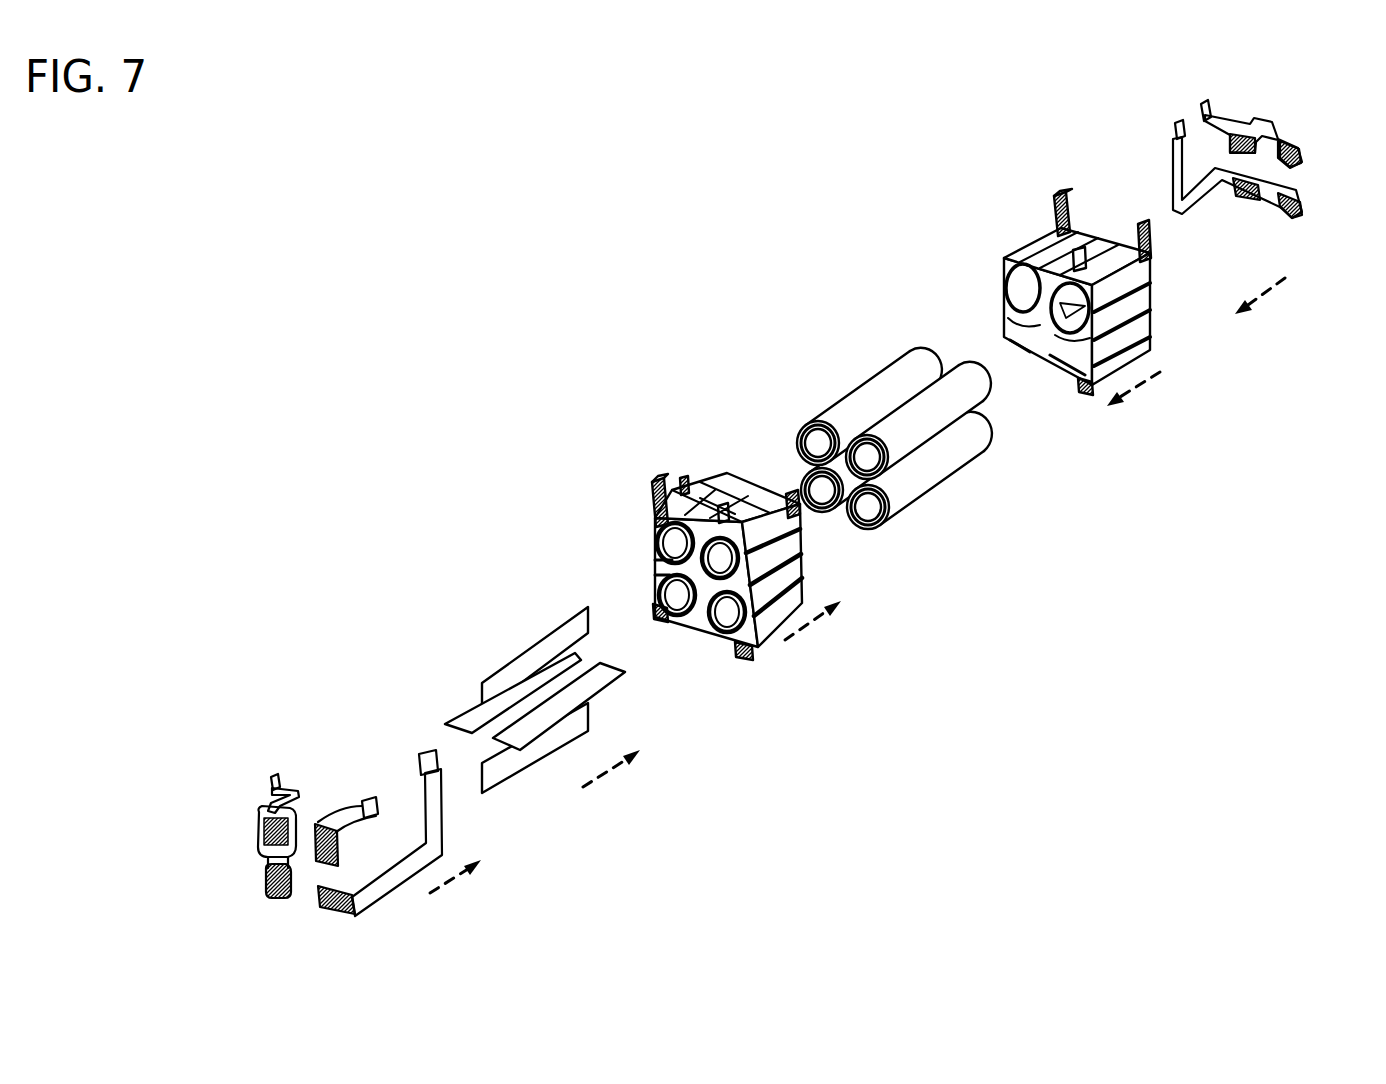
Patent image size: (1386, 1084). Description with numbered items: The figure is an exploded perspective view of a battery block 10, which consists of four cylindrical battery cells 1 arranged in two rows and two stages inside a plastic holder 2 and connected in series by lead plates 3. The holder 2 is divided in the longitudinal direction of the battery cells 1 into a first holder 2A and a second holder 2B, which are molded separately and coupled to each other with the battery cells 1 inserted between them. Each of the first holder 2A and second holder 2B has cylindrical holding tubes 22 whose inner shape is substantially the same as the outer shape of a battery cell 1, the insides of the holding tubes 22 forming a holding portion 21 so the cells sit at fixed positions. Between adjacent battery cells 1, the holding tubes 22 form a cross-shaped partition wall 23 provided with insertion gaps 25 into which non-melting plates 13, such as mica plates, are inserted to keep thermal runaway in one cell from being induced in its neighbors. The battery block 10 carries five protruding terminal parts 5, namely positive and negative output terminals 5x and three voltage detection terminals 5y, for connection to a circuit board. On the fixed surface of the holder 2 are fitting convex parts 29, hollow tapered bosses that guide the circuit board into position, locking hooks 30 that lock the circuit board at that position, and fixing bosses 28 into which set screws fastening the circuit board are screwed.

The battery cell 1 is at (862, 390).
The holder 2 is at (1128, 546).
The first holder 2A is at (778, 662).
The second holder 2B is at (1102, 412).
The lead plate 3 is at (1300, 160).
The terminal part 5 is at (1090, 64).
The output terminal 5x is at (372, 798).
The voltage detection terminal 5y is at (1200, 110).
The battery block 10 is at (497, 296).
The non-melting plate 13 is at (537, 660).
The holding portion 21 is at (1000, 293).
The holding tube 22 is at (1003, 286).
The partition wall 23 is at (1092, 303).
The insertion gap 25 is at (660, 605).
The fixing boss 28 is at (690, 477).
The fitting convex part 29 is at (1056, 203).
The locking hook 30 is at (658, 478).